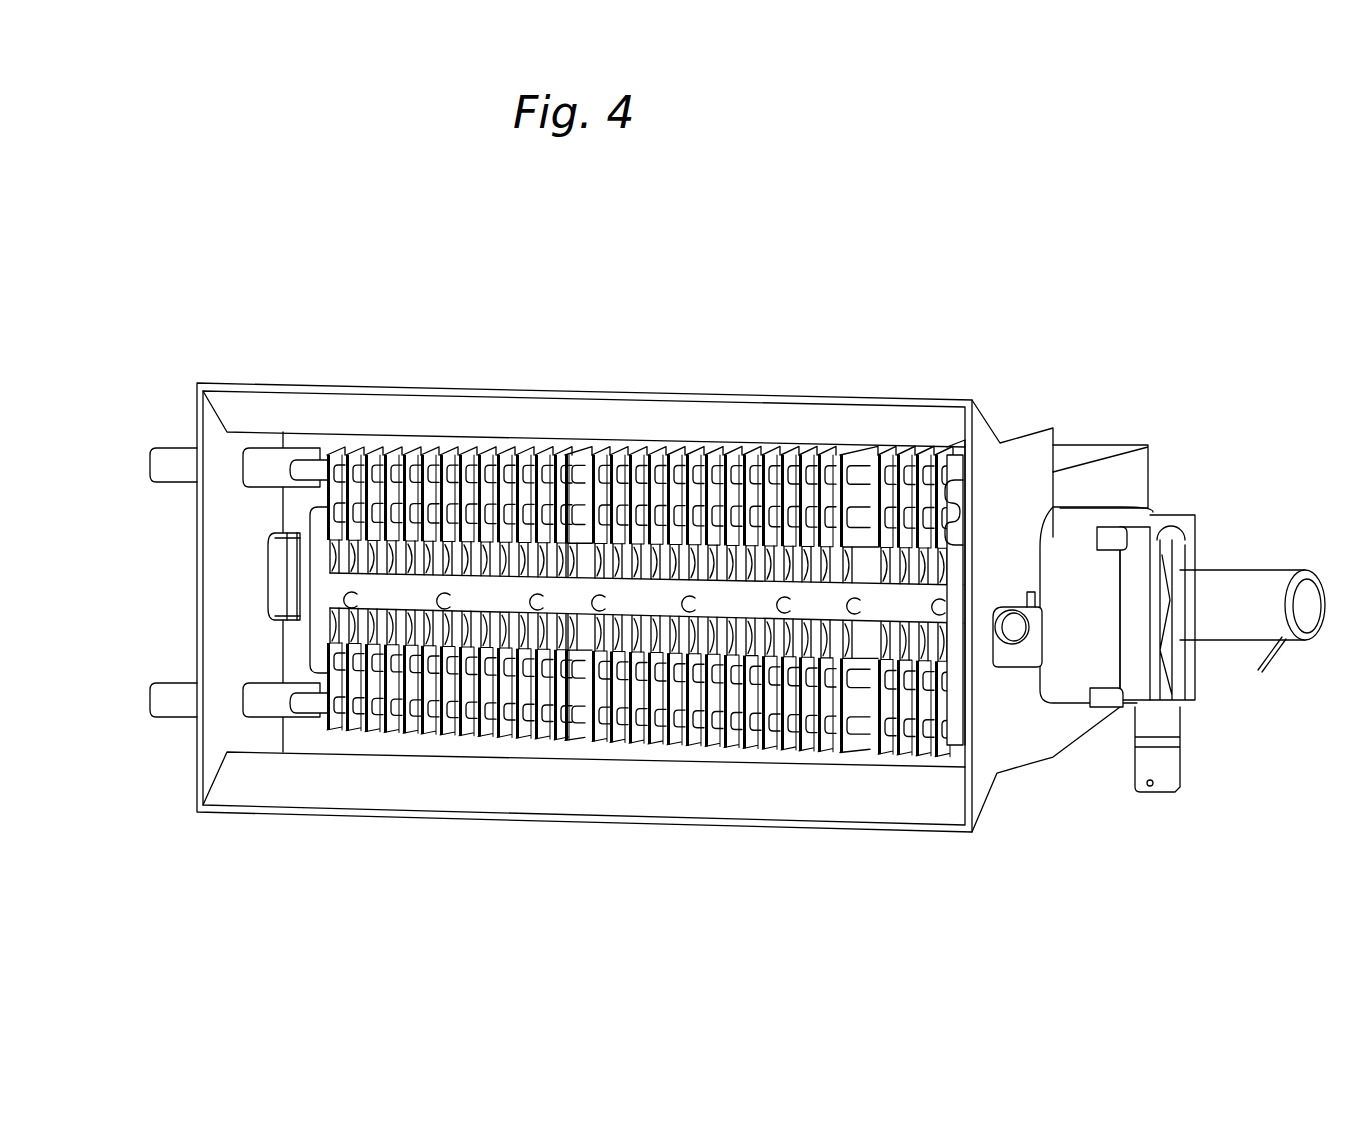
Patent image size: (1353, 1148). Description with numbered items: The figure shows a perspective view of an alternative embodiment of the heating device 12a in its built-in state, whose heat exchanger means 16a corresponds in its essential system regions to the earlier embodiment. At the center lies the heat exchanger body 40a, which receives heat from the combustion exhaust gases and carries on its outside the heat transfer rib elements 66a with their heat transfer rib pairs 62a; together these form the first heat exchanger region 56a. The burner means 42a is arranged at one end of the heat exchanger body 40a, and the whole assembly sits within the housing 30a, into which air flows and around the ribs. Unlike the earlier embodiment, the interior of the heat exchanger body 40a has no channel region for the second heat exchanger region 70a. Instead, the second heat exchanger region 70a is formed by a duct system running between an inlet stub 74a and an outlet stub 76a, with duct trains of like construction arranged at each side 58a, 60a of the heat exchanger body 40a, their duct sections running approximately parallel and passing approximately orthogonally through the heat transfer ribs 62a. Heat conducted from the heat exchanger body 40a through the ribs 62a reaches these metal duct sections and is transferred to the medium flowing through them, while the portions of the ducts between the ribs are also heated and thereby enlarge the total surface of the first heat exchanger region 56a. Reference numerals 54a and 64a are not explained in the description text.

The heating device 12a is at (1046, 219).
The heat exchanger means 16a is at (241, 653).
The housing 30a is at (1100, 445).
The heat exchanger body 40a is at (705, 515).
The burner means 42a is at (1168, 497).
The pump inlet port 54a is at (1020, 660).
The heat exchanger region 56a is at (258, 512).
The side of the heat exchanger body 58a is at (770, 748).
The side of the heat exchanger body 60a is at (917, 450).
The heat transfer rib pairs 62a is at (578, 447).
The fins 64a is at (640, 617).
The heat transfer rib elements 66a is at (530, 745).
The second heat exchanger region 70a is at (401, 412).
The inlet stub 74a is at (152, 447).
The outlet stub 76a is at (147, 708).